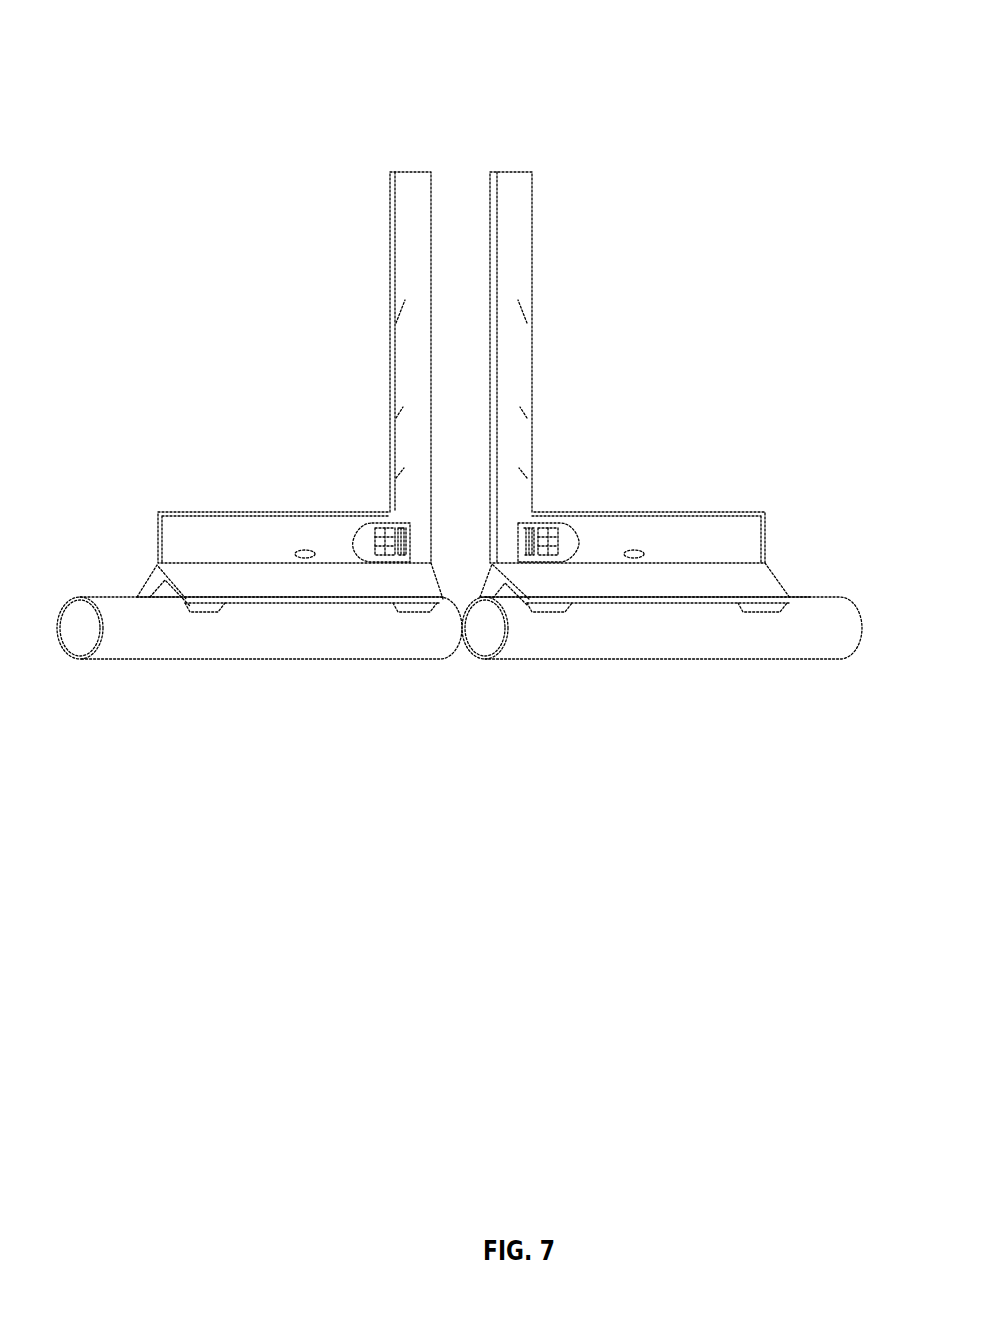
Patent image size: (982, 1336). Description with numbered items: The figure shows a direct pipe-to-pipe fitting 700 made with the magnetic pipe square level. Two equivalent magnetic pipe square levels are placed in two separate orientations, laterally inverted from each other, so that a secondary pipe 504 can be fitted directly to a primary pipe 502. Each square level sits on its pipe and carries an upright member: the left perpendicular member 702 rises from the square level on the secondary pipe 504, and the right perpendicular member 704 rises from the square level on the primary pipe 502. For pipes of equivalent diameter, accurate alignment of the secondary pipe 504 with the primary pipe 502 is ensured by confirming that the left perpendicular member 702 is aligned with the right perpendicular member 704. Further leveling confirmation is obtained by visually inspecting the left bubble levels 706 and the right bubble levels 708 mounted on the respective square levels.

The direct pipe-to-pipe fitting 700 is at (420, 68).
The left perpendicular member 702 is at (420, 253).
The right perpendicular member 704 is at (528, 250).
The left bubble levels 706 is at (380, 535).
The right bubble levels 708 is at (558, 540).
The secondary pipe 504 is at (398, 653).
The primary pipe 502 is at (538, 641).